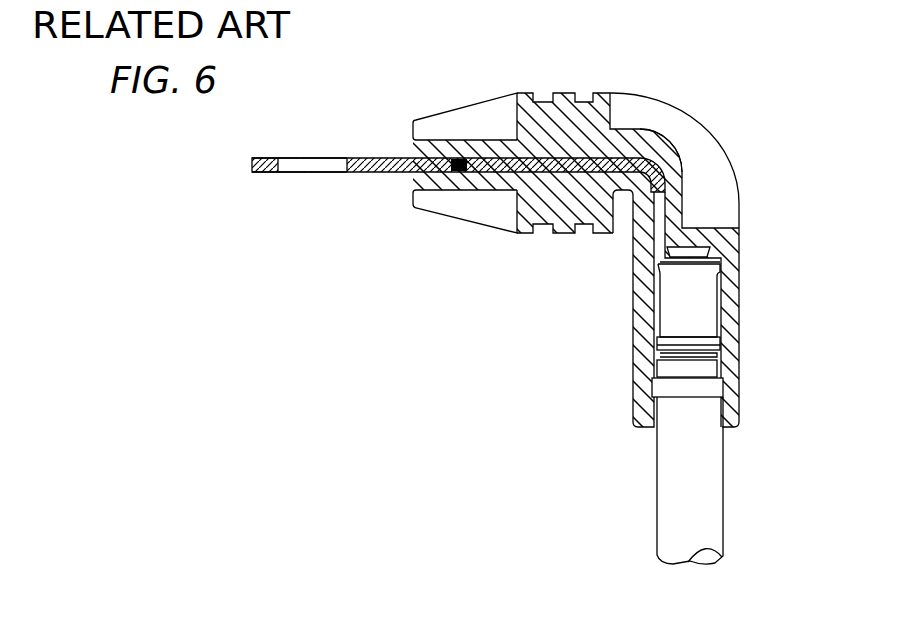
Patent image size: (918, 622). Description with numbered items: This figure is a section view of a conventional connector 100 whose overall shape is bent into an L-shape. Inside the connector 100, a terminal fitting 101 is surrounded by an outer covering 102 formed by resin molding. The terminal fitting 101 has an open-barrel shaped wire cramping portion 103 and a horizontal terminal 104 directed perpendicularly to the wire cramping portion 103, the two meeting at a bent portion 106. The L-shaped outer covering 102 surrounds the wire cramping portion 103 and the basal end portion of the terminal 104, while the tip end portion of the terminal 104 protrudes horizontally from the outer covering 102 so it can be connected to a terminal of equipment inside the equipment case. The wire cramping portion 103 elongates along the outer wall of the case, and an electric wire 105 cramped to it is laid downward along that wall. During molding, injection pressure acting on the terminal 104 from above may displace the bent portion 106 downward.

The connector 100 is at (717, 104).
The terminal fitting 101 is at (386, 180).
The outer covering 102 is at (580, 122).
The wire cramping portion 103 is at (663, 310).
The terminal 104 is at (367, 156).
The electric wire 105 is at (663, 477).
The bent portion 106 is at (690, 177).